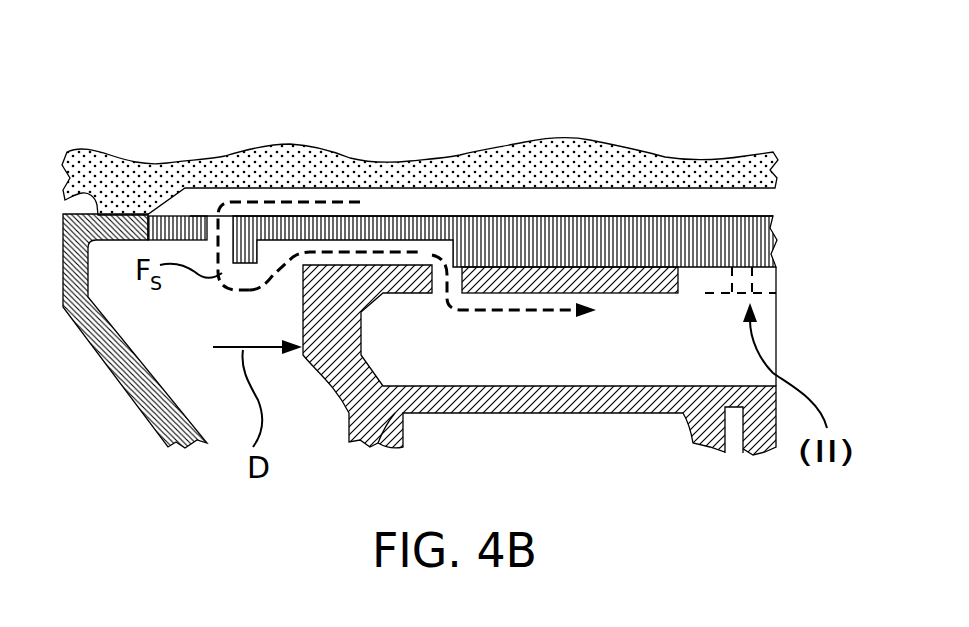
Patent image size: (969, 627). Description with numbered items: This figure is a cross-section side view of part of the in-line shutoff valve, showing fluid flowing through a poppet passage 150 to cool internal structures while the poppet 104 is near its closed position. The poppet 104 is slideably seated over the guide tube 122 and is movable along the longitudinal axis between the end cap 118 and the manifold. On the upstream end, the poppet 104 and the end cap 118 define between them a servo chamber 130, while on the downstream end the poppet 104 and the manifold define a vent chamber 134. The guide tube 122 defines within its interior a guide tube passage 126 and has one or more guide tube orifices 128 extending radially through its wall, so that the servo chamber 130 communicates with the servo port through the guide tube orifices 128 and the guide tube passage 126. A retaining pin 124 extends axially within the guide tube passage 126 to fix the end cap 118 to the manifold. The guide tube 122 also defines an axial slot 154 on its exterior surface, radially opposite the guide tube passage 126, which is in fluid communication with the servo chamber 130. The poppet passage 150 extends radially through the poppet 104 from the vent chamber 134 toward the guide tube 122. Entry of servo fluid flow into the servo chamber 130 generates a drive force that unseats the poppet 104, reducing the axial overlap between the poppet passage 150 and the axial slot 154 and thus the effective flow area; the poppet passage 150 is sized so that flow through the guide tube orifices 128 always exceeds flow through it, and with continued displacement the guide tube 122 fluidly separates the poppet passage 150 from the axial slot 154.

The poppet 104 is at (580, 390).
The end cap 118 is at (150, 387).
The guide tube 122 is at (748, 245).
The retaining pin 124 is at (598, 157).
The guide tube passage 126 is at (747, 205).
The guide tube orifice 128 is at (212, 215).
The servo chamber 130 is at (192, 338).
The vent chamber 134 is at (705, 356).
The poppet passage 150 is at (432, 260).
The axial slot 154 is at (328, 250).